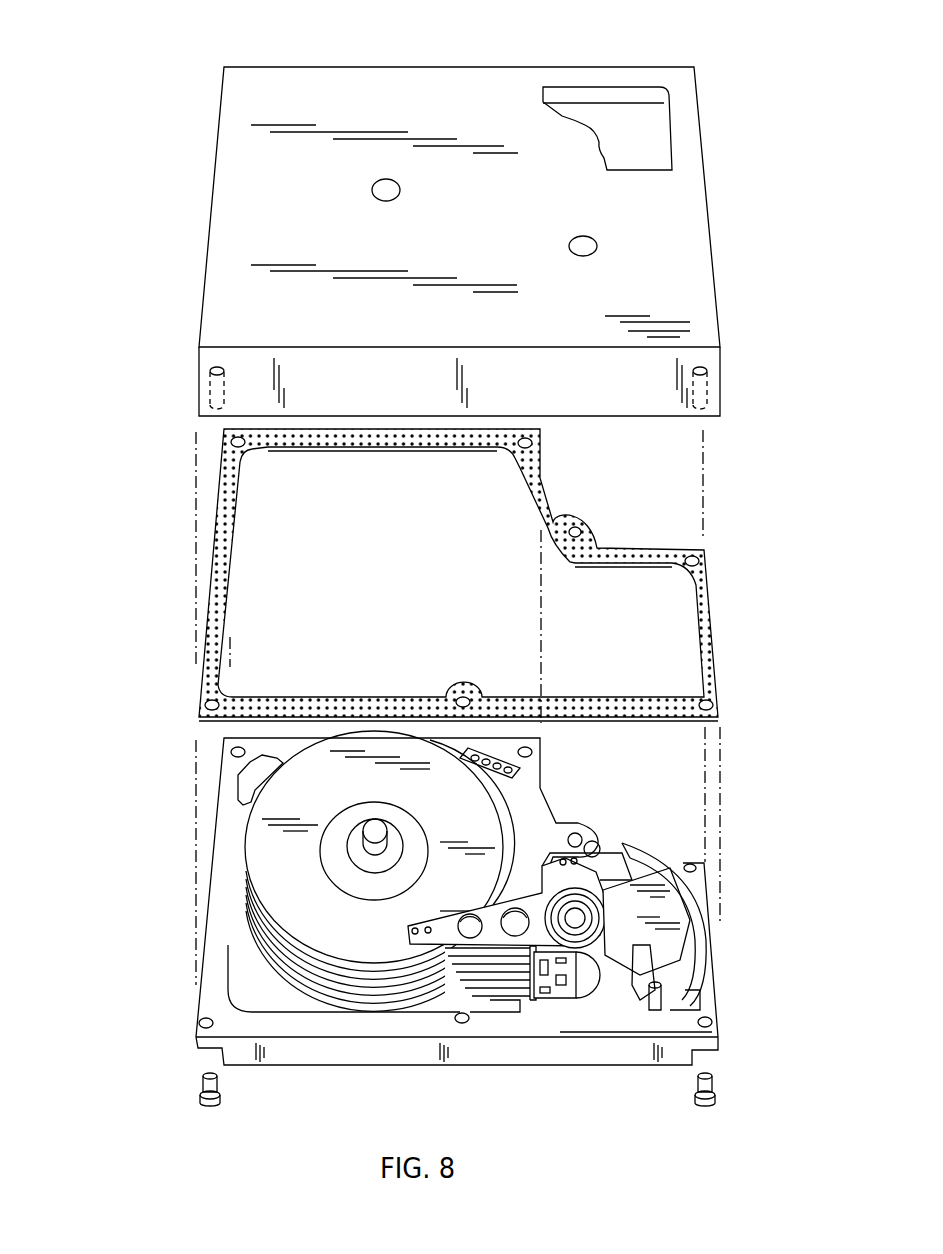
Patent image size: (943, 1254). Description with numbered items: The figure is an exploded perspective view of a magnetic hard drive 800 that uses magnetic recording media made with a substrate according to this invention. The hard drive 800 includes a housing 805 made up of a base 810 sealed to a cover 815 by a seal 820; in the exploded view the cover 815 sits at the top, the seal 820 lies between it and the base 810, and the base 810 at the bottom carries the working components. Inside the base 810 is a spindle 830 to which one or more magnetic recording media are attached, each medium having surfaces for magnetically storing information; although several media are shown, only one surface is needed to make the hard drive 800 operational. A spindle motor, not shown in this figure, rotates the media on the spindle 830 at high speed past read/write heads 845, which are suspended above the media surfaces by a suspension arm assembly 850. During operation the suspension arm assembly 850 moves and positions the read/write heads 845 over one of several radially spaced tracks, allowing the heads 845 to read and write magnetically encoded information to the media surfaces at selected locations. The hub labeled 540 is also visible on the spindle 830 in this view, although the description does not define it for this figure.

The magnetic hard drive 800 is at (71, 53).
The housing 805 is at (499, 235).
The cover 815 is at (712, 219).
The seal 820 is at (718, 600).
The base 810 is at (441, 926).
The spindle 830 is at (247, 885).
The spindle motor hub 540 is at (319, 910).
The read/write heads 845 is at (375, 942).
The suspension arm assembly 850 is at (490, 1000).